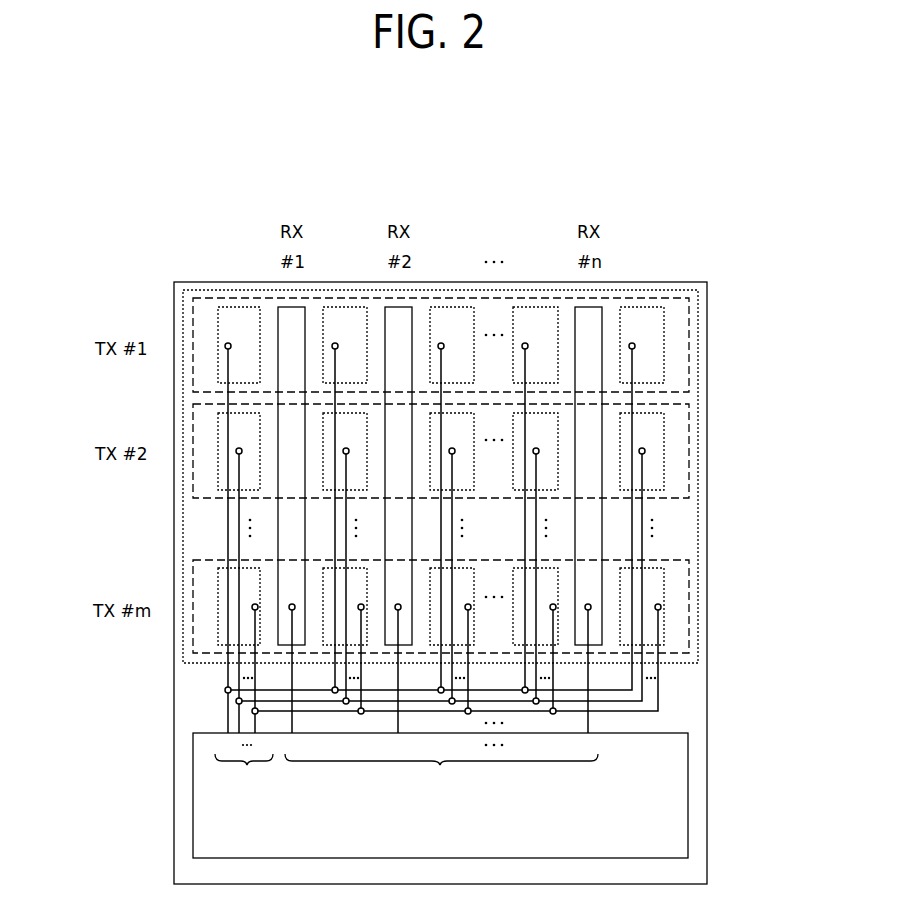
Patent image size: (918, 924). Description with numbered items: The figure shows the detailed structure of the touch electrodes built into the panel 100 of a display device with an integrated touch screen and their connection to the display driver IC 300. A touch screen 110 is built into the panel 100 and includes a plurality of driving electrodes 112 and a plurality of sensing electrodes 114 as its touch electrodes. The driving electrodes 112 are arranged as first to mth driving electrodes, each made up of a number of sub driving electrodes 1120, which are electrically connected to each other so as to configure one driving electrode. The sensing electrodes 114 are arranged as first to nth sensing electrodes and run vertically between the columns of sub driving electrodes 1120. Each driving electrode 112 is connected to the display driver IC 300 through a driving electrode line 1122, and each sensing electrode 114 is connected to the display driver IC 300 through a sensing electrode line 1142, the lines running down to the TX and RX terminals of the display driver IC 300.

The panel 100 is at (706, 358).
The touch screen 110 is at (698, 448).
The driving electrode 112 is at (193, 312).
The sub driving electrode 1120 is at (238, 307).
The driving electrode line 1122 is at (228, 531).
The sensing electrode 114 is at (296, 307).
The sensing electrode line 1142 is at (590, 670).
The display driver IC 300 is at (688, 778).